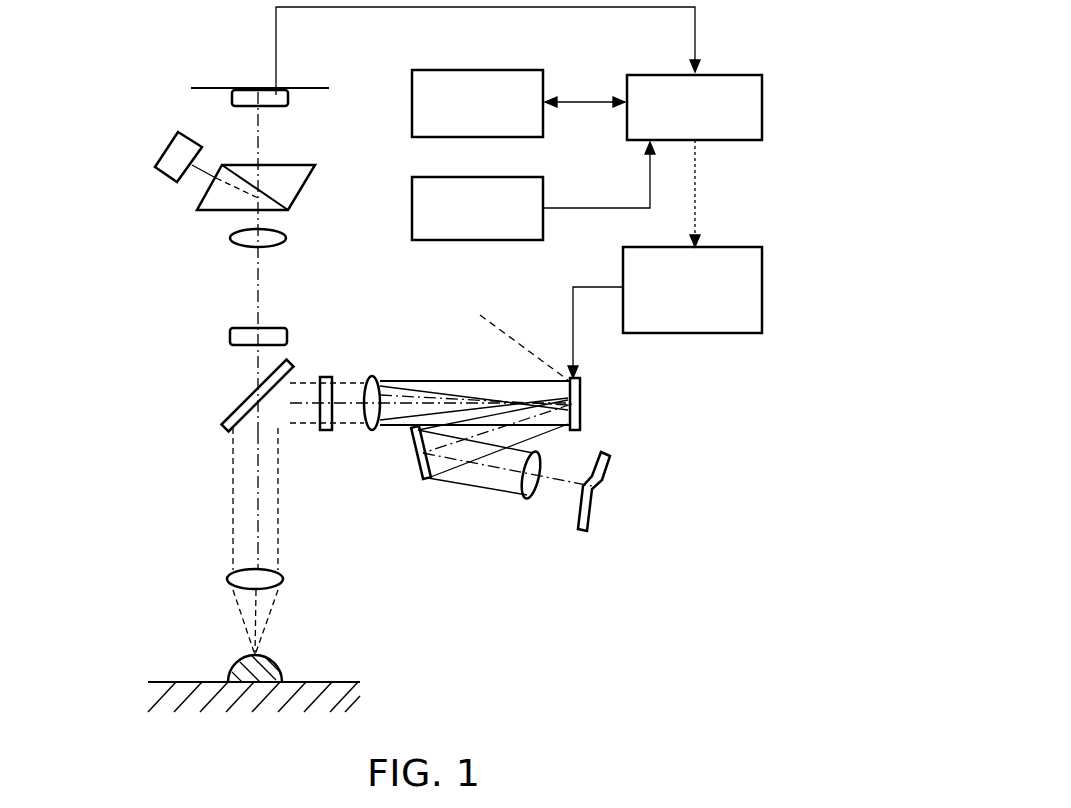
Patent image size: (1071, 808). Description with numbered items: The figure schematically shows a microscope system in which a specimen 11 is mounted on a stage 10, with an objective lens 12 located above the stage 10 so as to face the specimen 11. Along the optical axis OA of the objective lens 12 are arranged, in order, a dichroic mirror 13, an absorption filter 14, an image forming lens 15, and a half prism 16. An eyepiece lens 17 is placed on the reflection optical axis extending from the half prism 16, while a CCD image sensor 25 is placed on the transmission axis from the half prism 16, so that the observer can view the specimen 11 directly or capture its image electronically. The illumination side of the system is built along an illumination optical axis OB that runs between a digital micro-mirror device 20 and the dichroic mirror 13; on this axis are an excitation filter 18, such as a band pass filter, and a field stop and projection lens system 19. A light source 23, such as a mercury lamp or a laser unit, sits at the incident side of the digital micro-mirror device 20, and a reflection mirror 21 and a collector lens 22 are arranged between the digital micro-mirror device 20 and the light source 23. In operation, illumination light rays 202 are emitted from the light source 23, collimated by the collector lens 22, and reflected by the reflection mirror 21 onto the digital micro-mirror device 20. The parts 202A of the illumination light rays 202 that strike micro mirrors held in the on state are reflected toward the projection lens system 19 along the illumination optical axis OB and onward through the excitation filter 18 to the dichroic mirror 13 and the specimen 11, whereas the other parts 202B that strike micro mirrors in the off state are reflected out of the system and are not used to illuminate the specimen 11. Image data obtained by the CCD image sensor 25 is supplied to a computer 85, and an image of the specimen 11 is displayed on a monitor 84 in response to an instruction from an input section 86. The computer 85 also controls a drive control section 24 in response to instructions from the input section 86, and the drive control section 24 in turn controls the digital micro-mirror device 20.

The stage 10 is at (338, 680).
The specimen 11 is at (230, 672).
The objective lens 12 is at (228, 580).
The dichroic mirror 13 is at (226, 426).
The absorption filter 14 is at (230, 336).
The image forming lens 15 is at (228, 240).
The half prism 16 is at (305, 180).
The eyepiece lens 17 is at (162, 146).
The excitation filter 18 is at (323, 376).
The field stop and projection lens system 19 is at (372, 376).
The digital micro-mirror device 20 is at (582, 403).
The reflection mirror 21 is at (420, 484).
The collector lens 22 is at (528, 500).
The light source 23 is at (612, 470).
The drive control section 24 is at (765, 295).
The CCD image sensor 25 is at (288, 100).
The monitor 84 is at (483, 70).
The computer 85 is at (765, 107).
The input section 86 is at (500, 242).
The illumination light rays 202 is at (470, 492).
The parts of the illumination light rays 202A is at (436, 378).
The other parts of the illumination light rays 202B is at (500, 324).
The optical axis OA is at (258, 278).
The illumination optical axis OB is at (308, 418).